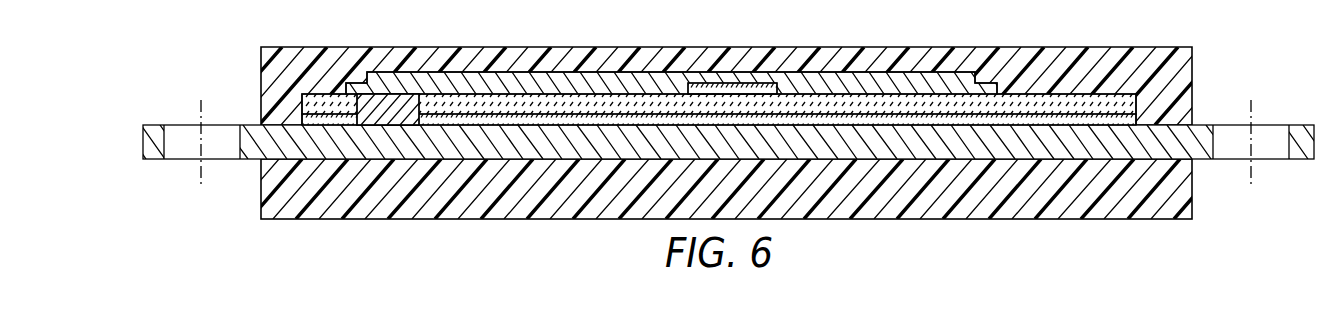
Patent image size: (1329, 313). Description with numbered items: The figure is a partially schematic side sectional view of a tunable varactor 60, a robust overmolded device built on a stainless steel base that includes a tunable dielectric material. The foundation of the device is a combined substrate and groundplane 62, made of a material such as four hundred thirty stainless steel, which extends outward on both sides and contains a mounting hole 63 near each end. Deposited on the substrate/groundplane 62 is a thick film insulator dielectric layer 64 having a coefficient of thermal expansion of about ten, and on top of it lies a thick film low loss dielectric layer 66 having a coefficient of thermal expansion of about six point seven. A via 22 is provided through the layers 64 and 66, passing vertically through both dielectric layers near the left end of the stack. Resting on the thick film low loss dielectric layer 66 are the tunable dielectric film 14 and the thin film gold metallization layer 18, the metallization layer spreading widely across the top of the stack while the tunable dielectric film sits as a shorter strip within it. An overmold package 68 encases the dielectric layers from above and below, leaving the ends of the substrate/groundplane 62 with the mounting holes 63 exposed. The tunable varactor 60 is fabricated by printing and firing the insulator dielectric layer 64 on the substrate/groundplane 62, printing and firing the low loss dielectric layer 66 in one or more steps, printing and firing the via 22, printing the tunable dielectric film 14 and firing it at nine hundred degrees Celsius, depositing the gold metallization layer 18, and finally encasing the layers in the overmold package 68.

The tunable varactor 60 is at (216, 40).
The combined substrate and groundplane 62 is at (1201, 128).
The mounting hole 63 is at (232, 143).
The thick film insulator dielectric layer 64 is at (1100, 120).
The thick film low loss dielectric layer 66 is at (1068, 103).
The overmold package 68 is at (970, 220).
The tunable dielectric film 14 is at (748, 83).
The thin film gold metallization layer 18 is at (870, 83).
The via 22 is at (390, 115).